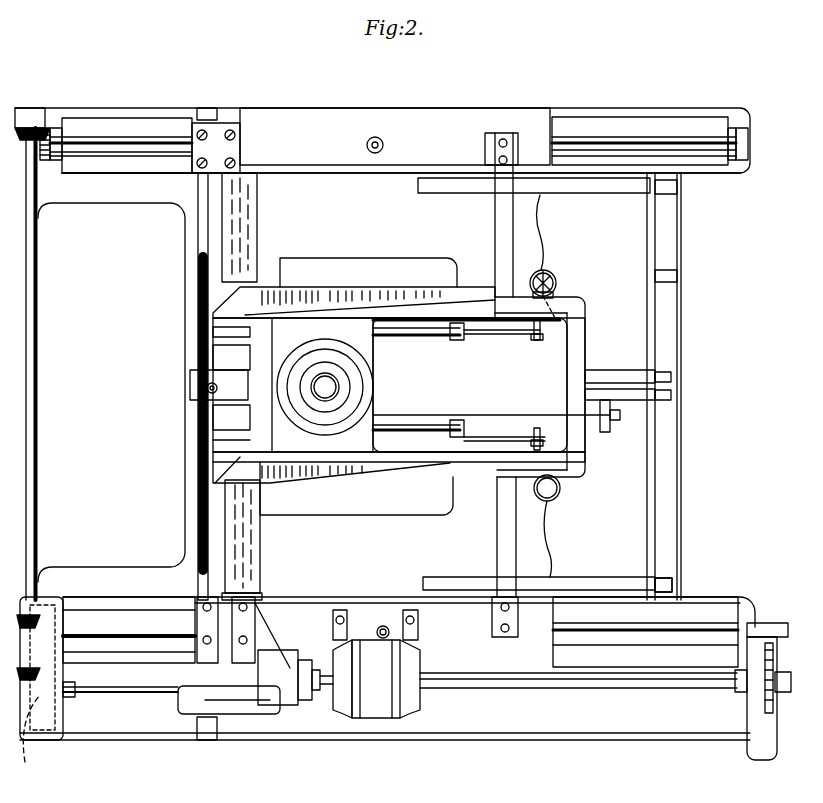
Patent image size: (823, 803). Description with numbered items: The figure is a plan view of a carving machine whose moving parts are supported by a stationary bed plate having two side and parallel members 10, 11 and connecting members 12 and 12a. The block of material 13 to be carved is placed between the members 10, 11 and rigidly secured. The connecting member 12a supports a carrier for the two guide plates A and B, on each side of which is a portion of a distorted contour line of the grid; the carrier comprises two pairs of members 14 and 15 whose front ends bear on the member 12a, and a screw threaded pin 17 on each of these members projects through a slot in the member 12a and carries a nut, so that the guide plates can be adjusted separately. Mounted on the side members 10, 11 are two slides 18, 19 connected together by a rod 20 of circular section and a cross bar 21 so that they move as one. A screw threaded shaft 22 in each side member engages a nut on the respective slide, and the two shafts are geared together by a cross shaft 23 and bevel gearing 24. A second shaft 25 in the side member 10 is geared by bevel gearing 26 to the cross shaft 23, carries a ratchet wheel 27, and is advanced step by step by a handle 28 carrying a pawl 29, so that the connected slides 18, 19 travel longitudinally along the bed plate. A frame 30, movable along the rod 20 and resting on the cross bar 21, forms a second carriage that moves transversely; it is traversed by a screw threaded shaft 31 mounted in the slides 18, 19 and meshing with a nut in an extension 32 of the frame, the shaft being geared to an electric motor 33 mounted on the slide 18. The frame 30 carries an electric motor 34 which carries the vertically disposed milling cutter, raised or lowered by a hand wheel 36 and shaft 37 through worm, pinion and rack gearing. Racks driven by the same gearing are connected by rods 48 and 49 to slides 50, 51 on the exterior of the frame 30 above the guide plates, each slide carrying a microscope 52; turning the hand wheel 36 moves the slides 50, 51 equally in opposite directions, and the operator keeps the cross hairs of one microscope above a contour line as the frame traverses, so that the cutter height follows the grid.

The side member 10 is at (100, 615).
The side member 11 is at (168, 122).
The connecting member 12 is at (185, 275).
The connecting member 12a is at (668, 237).
The block of material 13 is at (385, 497).
The carrier member 14 is at (633, 415).
The carrier member 15 is at (595, 185).
The screw threaded pin 17 is at (670, 583).
The slide 18 is at (467, 655).
The slide 19 is at (430, 118).
The rod 20 is at (243, 226).
The cross bar 21 is at (503, 249).
The screw threaded shaft 22 is at (110, 143).
The cross shaft 23 is at (38, 452).
The bevel gearing 24 is at (32, 130).
The second shaft 25 is at (113, 693).
The bevel gearing 26 is at (38, 739).
The ratchet wheel 27 is at (770, 717).
The handle 28 is at (762, 643).
The pawl 29 is at (742, 690).
The frame 30 is at (456, 352).
The screw threaded shaft 31 is at (577, 298).
The extension 32 is at (190, 393).
The electric motor 33 is at (380, 700).
The electric motor 34 is at (340, 388).
The hand wheel 36 is at (598, 455).
The shaft 37 is at (490, 418).
The rod 48 is at (472, 438).
The rod 49 is at (514, 325).
The slide 50 is at (562, 484).
The slide 51 is at (622, 283).
The microscope 52 is at (556, 283).
The guide plate A is at (625, 310).
The guide plate B is at (635, 486).